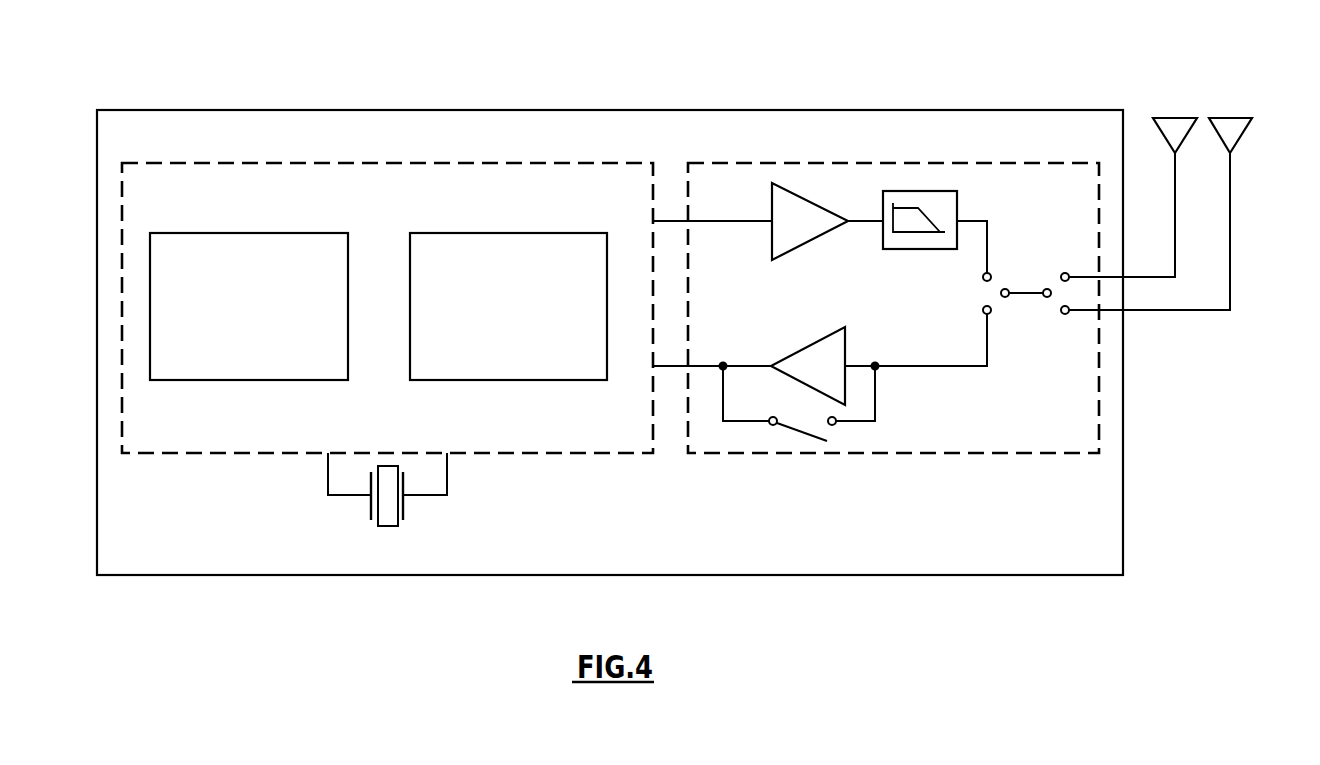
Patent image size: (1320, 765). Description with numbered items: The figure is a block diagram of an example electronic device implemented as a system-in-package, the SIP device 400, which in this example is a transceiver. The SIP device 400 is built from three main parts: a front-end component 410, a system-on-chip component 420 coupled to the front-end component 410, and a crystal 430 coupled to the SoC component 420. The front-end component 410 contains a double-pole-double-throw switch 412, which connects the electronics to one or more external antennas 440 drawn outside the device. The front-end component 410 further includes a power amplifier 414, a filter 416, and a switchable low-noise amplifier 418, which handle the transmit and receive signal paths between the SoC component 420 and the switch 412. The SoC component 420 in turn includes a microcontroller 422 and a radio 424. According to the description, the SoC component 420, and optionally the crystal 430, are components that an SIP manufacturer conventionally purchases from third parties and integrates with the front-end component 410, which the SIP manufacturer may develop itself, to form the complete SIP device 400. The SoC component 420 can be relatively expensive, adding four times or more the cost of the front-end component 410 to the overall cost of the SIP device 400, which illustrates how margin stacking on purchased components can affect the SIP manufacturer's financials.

The SIP device 400 is at (250, 110).
The front-end component 410 is at (1020, 163).
The double-pole-double-throw switch 412 is at (1022, 310).
The power amplifier 414 is at (805, 197).
The filter 416 is at (912, 191).
The switchable low-noise amplifier (LNA) 418 is at (848, 344).
The system-on-chip (SoC) component 420 is at (465, 163).
The microcontroller 422 is at (217, 233).
The radio 424 is at (477, 233).
The crystal 430 is at (413, 509).
The external antennas 440 is at (1175, 118).